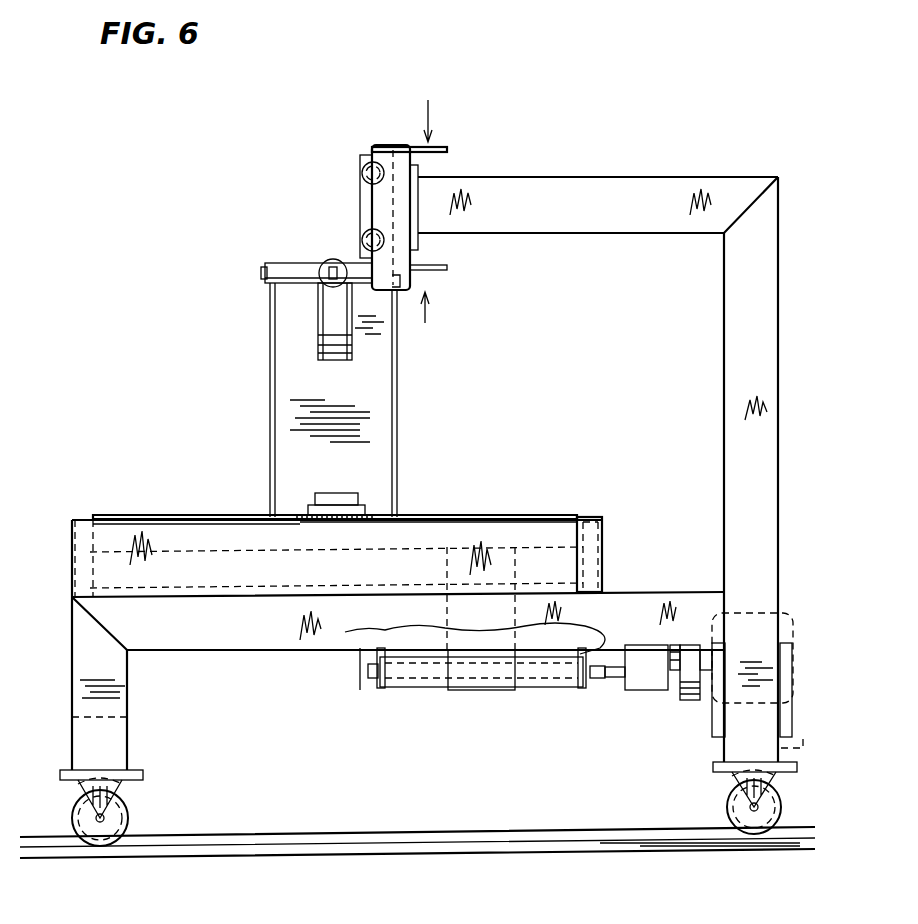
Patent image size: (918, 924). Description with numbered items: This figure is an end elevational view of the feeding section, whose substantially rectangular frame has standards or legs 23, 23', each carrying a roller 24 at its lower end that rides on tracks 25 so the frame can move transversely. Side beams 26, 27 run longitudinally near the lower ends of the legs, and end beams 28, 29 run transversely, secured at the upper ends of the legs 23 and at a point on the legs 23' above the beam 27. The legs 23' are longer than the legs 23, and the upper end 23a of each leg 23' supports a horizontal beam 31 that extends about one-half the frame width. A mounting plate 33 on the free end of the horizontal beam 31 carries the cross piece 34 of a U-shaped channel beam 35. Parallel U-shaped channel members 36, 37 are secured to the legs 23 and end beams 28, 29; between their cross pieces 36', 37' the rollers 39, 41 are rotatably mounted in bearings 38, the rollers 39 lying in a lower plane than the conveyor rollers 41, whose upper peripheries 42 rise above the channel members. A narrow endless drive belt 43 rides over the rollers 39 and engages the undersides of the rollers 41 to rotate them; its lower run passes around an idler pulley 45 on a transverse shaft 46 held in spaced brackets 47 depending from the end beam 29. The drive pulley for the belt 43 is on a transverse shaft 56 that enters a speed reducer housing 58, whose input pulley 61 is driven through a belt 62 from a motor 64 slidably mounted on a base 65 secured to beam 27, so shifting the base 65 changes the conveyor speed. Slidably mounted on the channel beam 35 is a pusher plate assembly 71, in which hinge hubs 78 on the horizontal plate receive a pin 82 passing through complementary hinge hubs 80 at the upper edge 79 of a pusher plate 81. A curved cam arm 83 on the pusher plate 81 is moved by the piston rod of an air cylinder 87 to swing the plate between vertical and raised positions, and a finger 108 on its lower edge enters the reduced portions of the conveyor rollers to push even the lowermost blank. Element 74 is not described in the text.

The slide plate 74 is at (364, 194).
The legs 23 is at (80, 650).
The upper end of leg 23a is at (783, 182).
The legs 23' is at (739, 754).
The roller 24 is at (70, 814).
The tracks 25 is at (632, 810).
The side beam 26 is at (140, 730).
The side beam 27 is at (796, 746).
The end beam 28 is at (216, 650).
The end beam 29 is at (340, 654).
The horizontal beam 31 is at (644, 182).
The mounting plate 33 is at (428, 176).
The cross piece 34 is at (424, 262).
The U-shaped channel beam 35 is at (409, 113).
The U-shaped channel member 36 is at (93, 533).
The cross piece 36' is at (54, 536).
The U-shaped channel member 37 is at (606, 523).
The cross piece 37' is at (624, 561).
The bearings 38 is at (600, 545).
The rollers 39 is at (214, 594).
The rollers 41 is at (496, 520).
The upper peripheries 42 is at (208, 516).
The endless drive belt 43 is at (440, 608).
The idler pulley 45 is at (402, 688).
The transverse shaft 46 is at (432, 692).
The brackets 47 is at (366, 668).
The transverse shaft 56 is at (608, 682).
The speed reducer housing 58 is at (642, 696).
The pulley 61 is at (675, 694).
The belt 62 is at (690, 646).
The motor 64 is at (788, 632).
The base 65 is at (792, 702).
The pusher plate assembly 71 is at (431, 319).
The hinge hubs 78 is at (278, 264).
The upper edge 79 is at (276, 284).
The hinge hubs 80 is at (320, 292).
The pusher plate 81 is at (284, 374).
The pin 82 is at (261, 276).
The curved cam arm 83 is at (342, 360).
The air cylinder 87 is at (330, 258).
The finger 108 is at (342, 498).